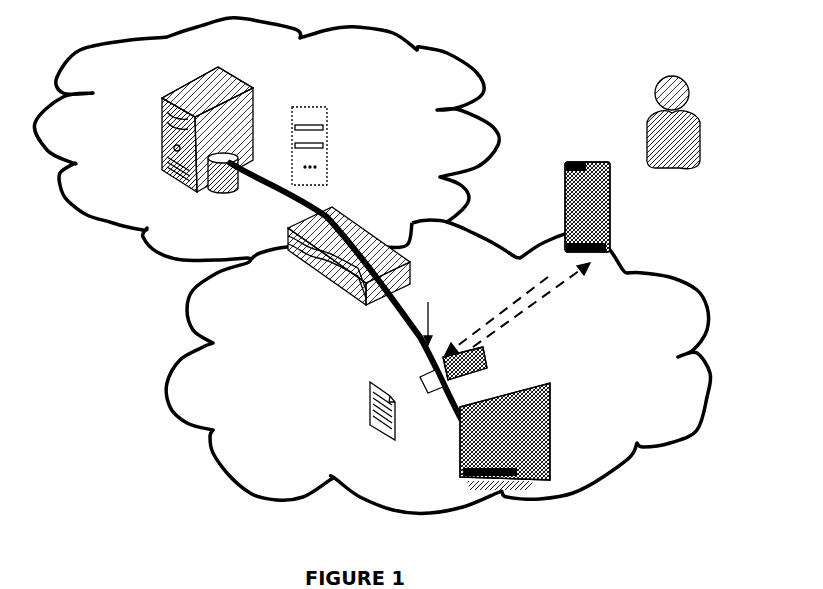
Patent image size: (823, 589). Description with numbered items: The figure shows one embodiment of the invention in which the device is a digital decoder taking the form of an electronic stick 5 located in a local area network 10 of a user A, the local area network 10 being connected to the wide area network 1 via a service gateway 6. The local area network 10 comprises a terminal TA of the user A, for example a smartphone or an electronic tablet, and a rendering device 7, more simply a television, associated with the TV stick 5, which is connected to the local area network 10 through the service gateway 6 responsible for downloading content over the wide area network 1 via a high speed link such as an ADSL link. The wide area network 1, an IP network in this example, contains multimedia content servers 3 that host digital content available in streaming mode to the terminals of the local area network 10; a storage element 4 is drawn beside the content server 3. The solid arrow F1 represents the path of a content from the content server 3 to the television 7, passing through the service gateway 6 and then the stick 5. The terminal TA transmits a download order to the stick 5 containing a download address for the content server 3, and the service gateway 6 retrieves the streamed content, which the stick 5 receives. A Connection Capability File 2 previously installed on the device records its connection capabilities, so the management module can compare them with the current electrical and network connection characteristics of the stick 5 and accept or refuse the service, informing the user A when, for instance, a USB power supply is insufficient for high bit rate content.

The wide area network 1 is at (433, 50).
The Connection Capability File 2 is at (369, 387).
The content server 3 is at (262, 92).
The storage rack / database 4 is at (282, 113).
The electronic stick 5 is at (490, 347).
The service gateway 6 is at (387, 244).
The rendering device 7 is at (557, 392).
The local area network 10 is at (684, 290).
The solid arrow F1 is at (428, 313).
The terminal TA is at (625, 166).
The user A is at (702, 138).